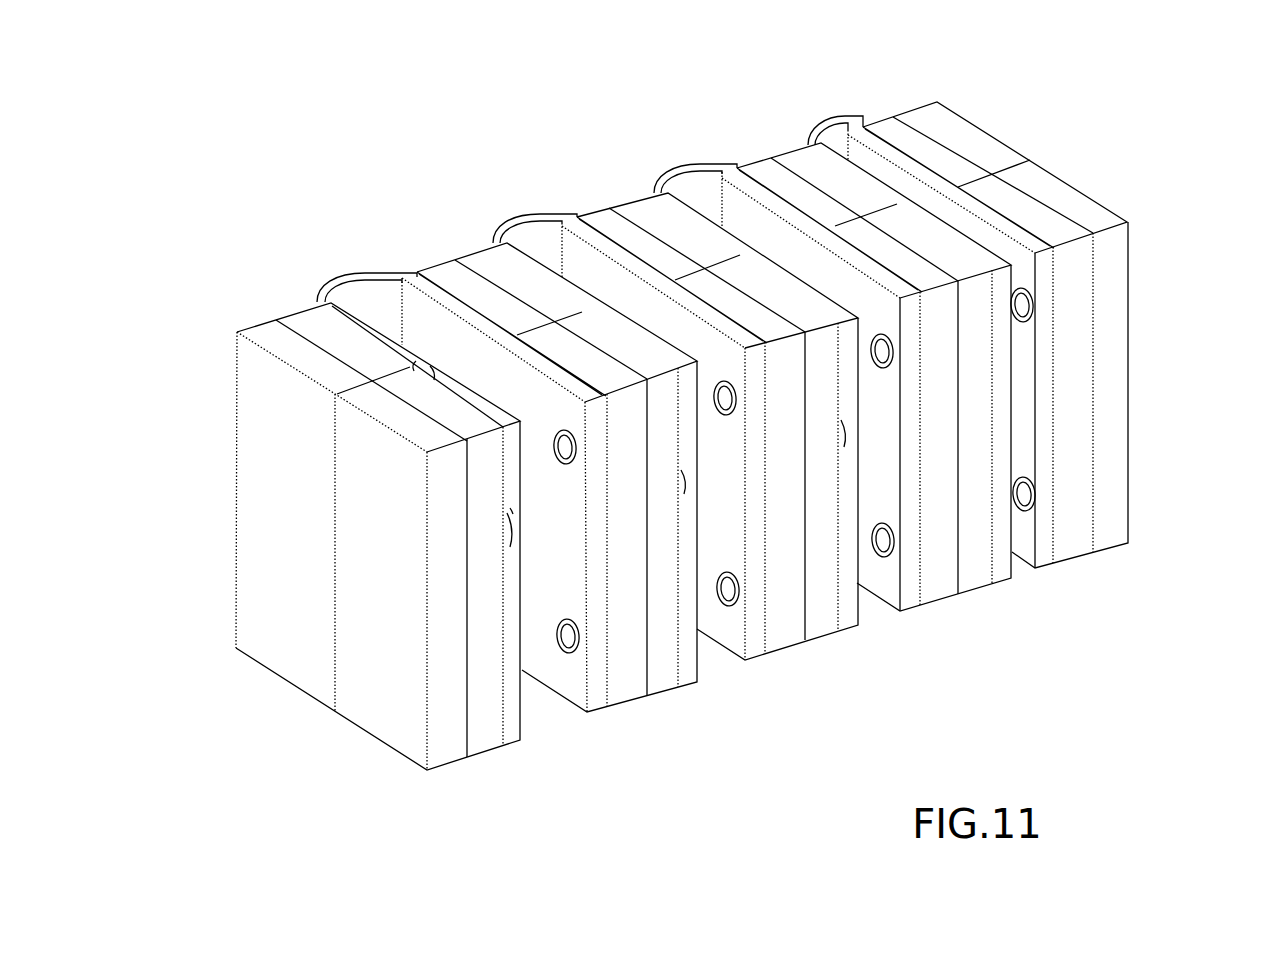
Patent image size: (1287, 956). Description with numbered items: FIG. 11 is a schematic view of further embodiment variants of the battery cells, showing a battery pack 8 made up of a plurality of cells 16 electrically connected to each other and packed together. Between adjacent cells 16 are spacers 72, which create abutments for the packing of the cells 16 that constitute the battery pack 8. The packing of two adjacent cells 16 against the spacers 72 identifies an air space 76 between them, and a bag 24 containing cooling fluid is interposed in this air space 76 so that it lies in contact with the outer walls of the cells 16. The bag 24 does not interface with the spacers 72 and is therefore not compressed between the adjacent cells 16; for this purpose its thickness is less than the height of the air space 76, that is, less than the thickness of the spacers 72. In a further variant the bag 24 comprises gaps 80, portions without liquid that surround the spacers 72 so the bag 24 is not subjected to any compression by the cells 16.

The battery pack 8 is at (715, 421).
The cells 16 is at (252, 312).
The bag 24 is at (326, 299).
The spacers 72 is at (1020, 307).
The air space 76 is at (388, 313).
The gaps 80 is at (1035, 488).